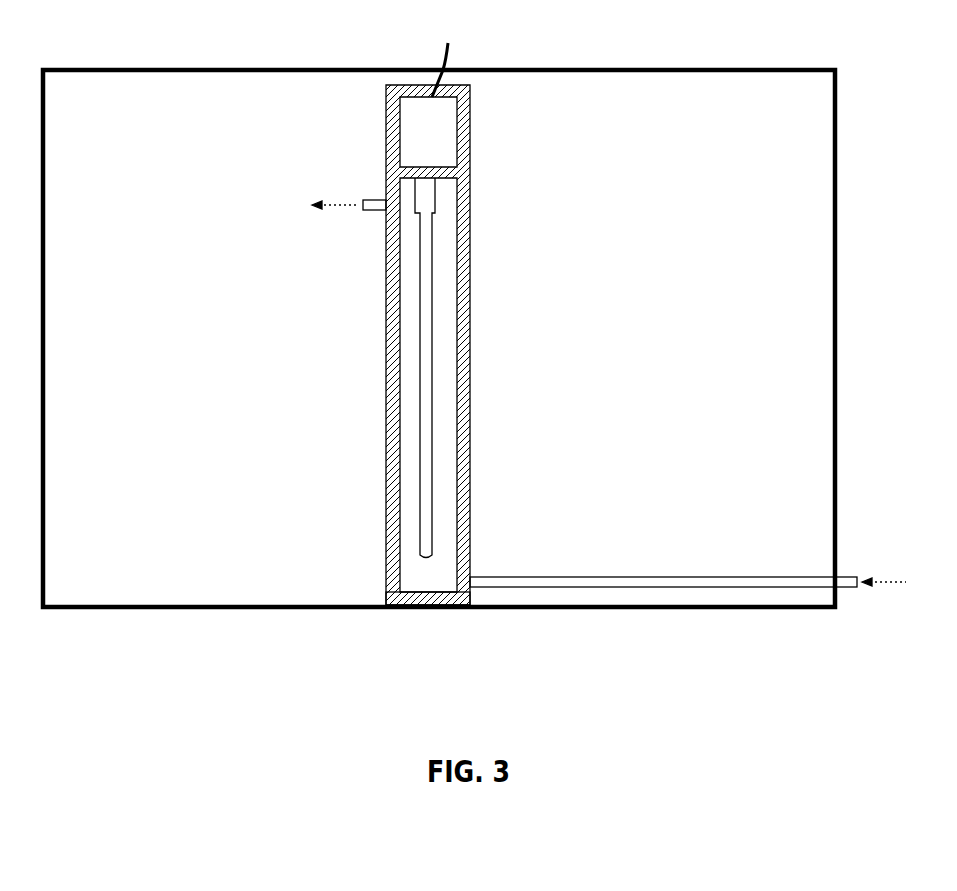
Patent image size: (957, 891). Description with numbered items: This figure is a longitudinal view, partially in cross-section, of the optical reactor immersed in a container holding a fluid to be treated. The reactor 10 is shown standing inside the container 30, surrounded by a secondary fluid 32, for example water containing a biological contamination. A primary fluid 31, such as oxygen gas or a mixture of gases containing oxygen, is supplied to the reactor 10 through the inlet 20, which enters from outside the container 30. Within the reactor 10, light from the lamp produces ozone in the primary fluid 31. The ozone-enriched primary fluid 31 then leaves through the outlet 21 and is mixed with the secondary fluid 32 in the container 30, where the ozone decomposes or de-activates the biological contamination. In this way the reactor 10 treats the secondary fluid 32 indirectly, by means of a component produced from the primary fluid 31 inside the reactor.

The reactor 10 is at (484, 338).
The inlet 20 is at (652, 580).
The outlet 21 is at (372, 208).
The container 30 is at (218, 607).
The primary fluid 31 is at (442, 578).
The secondary fluid 32 is at (305, 557).